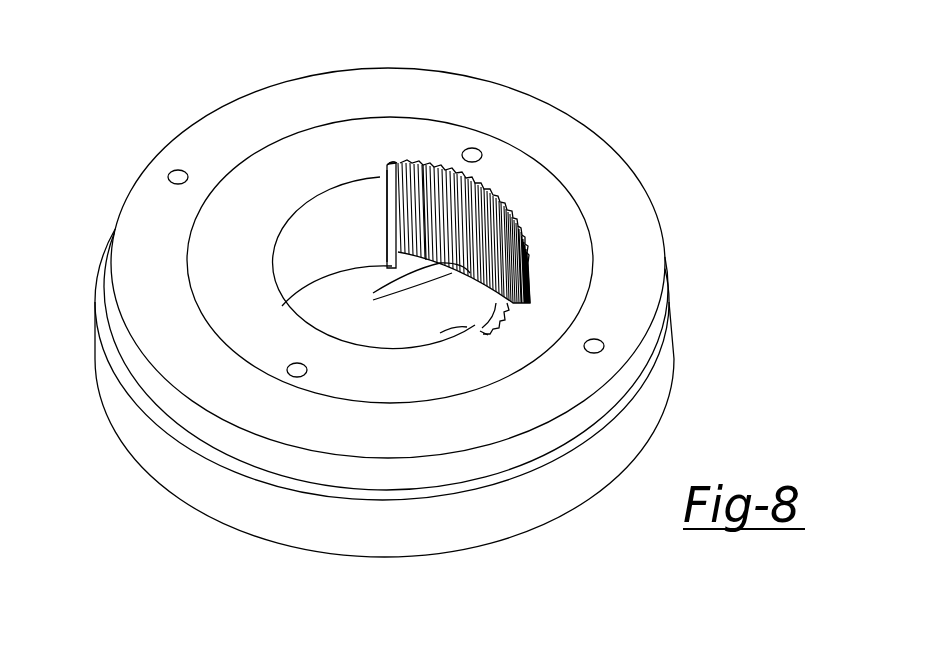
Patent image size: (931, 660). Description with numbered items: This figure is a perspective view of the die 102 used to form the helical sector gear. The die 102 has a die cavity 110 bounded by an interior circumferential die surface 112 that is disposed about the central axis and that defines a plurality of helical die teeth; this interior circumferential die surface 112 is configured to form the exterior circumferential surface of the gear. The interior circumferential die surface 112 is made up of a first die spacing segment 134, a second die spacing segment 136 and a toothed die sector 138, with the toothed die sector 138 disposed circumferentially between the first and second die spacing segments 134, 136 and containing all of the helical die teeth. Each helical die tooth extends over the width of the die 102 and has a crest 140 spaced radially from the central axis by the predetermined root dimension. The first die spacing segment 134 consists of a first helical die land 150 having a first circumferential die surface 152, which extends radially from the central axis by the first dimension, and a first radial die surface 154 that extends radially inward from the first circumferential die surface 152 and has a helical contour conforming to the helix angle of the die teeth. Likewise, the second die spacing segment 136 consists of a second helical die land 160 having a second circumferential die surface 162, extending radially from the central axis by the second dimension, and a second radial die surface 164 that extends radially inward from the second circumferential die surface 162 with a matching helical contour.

The die 102 is at (217, 280).
The die cavity 110 is at (325, 215).
The interior circumferential die surface 112 is at (286, 236).
The first die spacing segment 134 is at (468, 348).
The second die spacing segment 136 is at (379, 148).
The toothed die sector 138 is at (503, 186).
The crest 140 is at (404, 288).
The first helical die land 150 is at (490, 338).
The first circumferential die surface 152 is at (510, 303).
The first radial die surface 154 is at (480, 331).
The second helical die land 160 is at (378, 230).
The second circumferential die surface 162 is at (427, 165).
The second radial die surface 164 is at (383, 160).